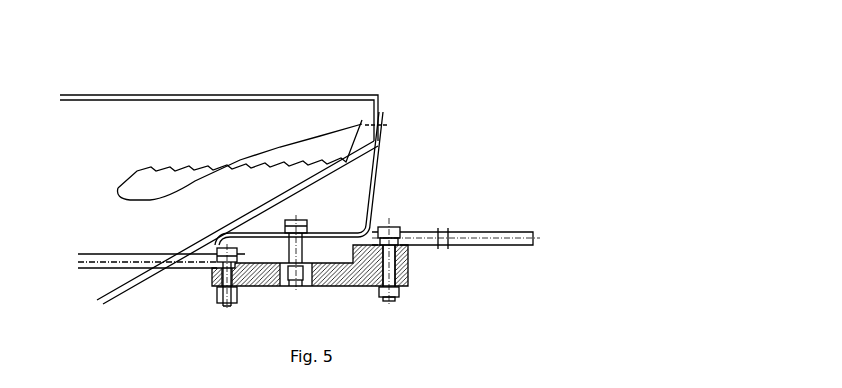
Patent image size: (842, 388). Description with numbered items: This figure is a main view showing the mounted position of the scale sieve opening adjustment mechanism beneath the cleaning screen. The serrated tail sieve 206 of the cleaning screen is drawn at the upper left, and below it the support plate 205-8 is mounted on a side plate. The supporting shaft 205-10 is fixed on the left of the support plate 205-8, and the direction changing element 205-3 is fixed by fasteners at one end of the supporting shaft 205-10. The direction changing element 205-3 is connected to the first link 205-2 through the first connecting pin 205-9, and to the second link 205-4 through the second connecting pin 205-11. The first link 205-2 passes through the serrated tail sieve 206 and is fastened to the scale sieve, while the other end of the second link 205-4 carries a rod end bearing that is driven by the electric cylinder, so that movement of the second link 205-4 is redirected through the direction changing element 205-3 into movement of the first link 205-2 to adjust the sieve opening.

The serrated tail sieve 206 is at (323, 70).
The support plate 205-8 is at (378, 167).
The first link 205-2 is at (107, 265).
The direction changing element 205-3 is at (212, 287).
The first connecting pin 205-9 is at (242, 287).
The supporting shaft 205-10 is at (300, 283).
The second connecting pin 205-11 is at (400, 290).
The second link 205-4 is at (485, 240).